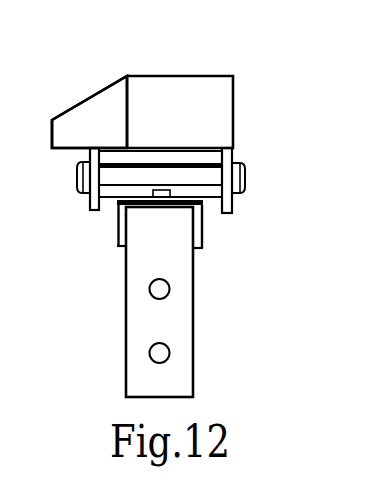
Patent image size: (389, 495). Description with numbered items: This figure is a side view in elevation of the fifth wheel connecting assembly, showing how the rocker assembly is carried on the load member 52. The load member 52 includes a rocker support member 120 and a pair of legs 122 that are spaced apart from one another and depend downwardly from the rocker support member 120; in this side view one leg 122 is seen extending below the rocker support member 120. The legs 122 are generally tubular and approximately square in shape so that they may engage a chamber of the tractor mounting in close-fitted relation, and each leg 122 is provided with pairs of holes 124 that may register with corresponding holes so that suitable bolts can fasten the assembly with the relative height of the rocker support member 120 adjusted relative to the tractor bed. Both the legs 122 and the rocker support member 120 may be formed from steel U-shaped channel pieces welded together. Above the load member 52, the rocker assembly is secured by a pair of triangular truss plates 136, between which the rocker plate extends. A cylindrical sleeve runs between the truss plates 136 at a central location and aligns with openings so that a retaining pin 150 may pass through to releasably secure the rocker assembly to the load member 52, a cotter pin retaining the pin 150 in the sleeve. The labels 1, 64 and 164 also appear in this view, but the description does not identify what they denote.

The leader to bracket leg 1 is at (205, 200).
The load member 52 is at (8, 247).
The arm 64 is at (66, 112).
The rocker support member 120 is at (117, 235).
The legs 122 is at (150, 313).
The holes 124 is at (163, 289).
The triangular truss plates 136 is at (89, 199).
The retaining pin 150 is at (246, 181).
The mounting block 164 is at (93, 117).